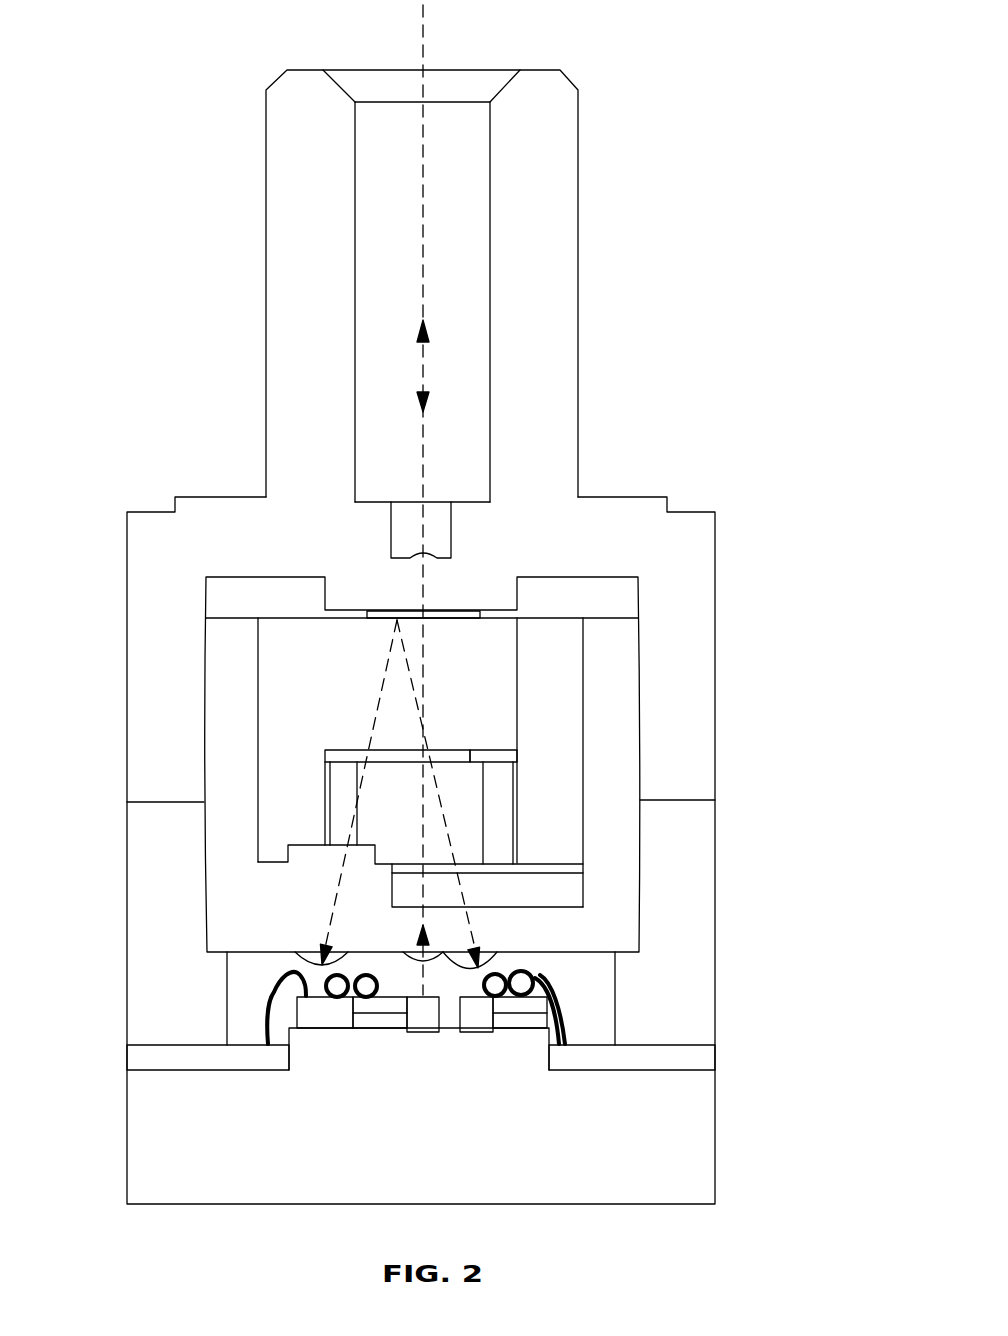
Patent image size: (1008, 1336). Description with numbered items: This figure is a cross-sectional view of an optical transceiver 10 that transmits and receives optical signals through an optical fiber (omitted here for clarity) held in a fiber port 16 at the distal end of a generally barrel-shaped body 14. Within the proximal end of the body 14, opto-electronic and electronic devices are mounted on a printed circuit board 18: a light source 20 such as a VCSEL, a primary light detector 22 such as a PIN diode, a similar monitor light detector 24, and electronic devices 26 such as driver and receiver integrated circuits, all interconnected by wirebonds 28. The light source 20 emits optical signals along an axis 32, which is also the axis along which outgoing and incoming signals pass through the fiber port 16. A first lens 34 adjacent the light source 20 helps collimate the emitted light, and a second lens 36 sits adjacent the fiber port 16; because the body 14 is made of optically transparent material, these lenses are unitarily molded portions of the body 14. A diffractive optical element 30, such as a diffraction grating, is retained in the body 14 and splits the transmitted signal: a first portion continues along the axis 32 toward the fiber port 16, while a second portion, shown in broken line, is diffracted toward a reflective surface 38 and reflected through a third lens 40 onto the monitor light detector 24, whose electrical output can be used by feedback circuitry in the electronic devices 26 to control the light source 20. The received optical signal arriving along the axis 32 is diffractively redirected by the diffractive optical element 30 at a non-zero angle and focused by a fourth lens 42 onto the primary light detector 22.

The optical transceiver 10 is at (808, 112).
The body 14 is at (127, 655).
The fiber port 16 is at (266, 266).
The printed circuit board 18 is at (127, 1046).
The light source 20 is at (421, 1032).
The primary light detector 22 is at (483, 1032).
The monitor light detector 24 is at (315, 1030).
The electronic devices 26 is at (371, 1028).
The wirebonds 28 is at (265, 1005).
The diffractive optical element 30 is at (452, 750).
The axis 32 is at (423, 32).
The first lens 34 is at (408, 957).
The second lens 36 is at (437, 558).
The reflective surface 38 is at (383, 610).
The third lens 40 is at (302, 955).
The fourth lens 42 is at (495, 955).